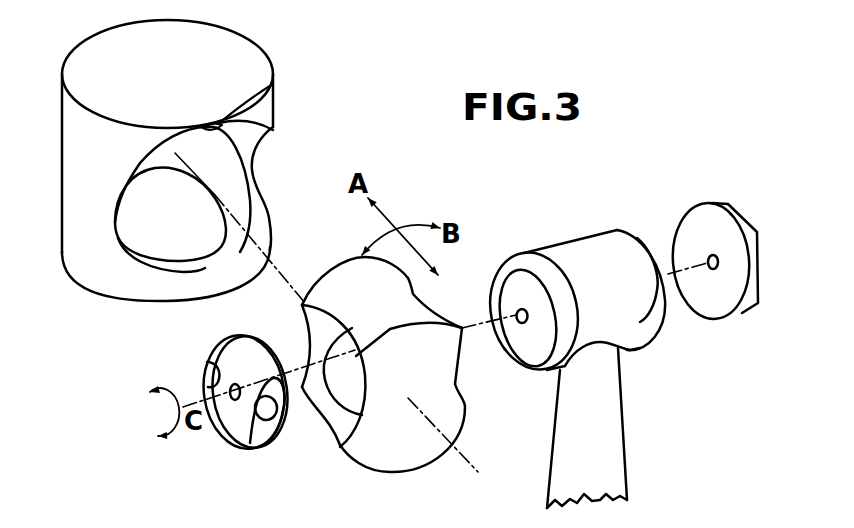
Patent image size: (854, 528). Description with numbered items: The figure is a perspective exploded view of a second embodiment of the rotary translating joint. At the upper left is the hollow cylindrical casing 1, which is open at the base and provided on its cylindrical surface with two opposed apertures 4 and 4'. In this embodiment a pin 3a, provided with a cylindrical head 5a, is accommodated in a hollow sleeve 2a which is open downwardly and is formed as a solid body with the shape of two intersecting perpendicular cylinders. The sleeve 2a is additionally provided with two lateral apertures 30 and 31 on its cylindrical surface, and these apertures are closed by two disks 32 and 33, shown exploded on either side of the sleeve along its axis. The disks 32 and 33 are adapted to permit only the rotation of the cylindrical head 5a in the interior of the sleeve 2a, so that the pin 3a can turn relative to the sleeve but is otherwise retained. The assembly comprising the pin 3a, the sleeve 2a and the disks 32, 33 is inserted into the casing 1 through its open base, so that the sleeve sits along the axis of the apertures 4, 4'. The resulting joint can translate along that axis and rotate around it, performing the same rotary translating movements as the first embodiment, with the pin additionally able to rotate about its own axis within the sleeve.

The hollow cylindrical casing 1 is at (228, 63).
The aperture 4 is at (219, 212).
The aperture 4' is at (261, 96).
The hollow sleeve 2a is at (448, 418).
The lateral aperture 30 is at (343, 420).
The lateral aperture 31 is at (430, 304).
The disk 32 is at (237, 425).
The disk 33 is at (722, 303).
The cylindrical head 5a is at (580, 255).
The pin 3a is at (608, 405).